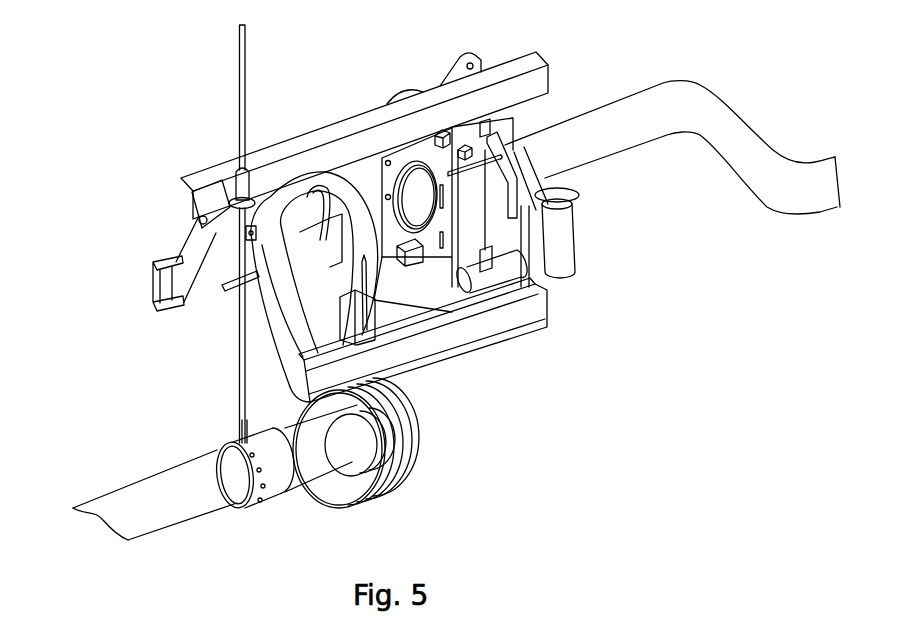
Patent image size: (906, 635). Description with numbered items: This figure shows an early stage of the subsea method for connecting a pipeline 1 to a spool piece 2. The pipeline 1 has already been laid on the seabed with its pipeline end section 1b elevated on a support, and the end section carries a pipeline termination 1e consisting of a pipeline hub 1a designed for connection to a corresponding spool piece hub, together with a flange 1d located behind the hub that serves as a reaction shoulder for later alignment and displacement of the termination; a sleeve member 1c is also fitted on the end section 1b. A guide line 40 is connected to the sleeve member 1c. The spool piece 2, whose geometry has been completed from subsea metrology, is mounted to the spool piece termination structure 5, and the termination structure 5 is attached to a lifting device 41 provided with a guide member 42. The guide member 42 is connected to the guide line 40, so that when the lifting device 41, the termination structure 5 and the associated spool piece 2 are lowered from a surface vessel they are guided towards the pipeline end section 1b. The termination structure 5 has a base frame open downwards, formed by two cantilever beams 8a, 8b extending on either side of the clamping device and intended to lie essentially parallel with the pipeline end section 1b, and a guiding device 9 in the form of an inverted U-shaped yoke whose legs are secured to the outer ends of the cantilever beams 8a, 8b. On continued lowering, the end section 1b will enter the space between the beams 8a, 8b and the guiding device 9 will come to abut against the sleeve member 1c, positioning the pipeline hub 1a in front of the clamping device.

The pipeline 1 is at (107, 503).
The pipeline hub 1a is at (403, 420).
The pipeline end section 1b is at (320, 480).
The sleeve member 1c is at (273, 490).
The flange 1d is at (363, 483).
The pipeline termination 1e is at (388, 460).
The spool piece 2 is at (640, 113).
The spool piece termination structure 5 is at (363, 227).
The cantilever beam 8a is at (443, 337).
The cantilever beam 8b is at (237, 271).
The guiding device (yoke) 9 is at (178, 213).
The guide line 40 is at (205, 234).
The lifting device 41 is at (331, 130).
The guide member 42 is at (237, 177).